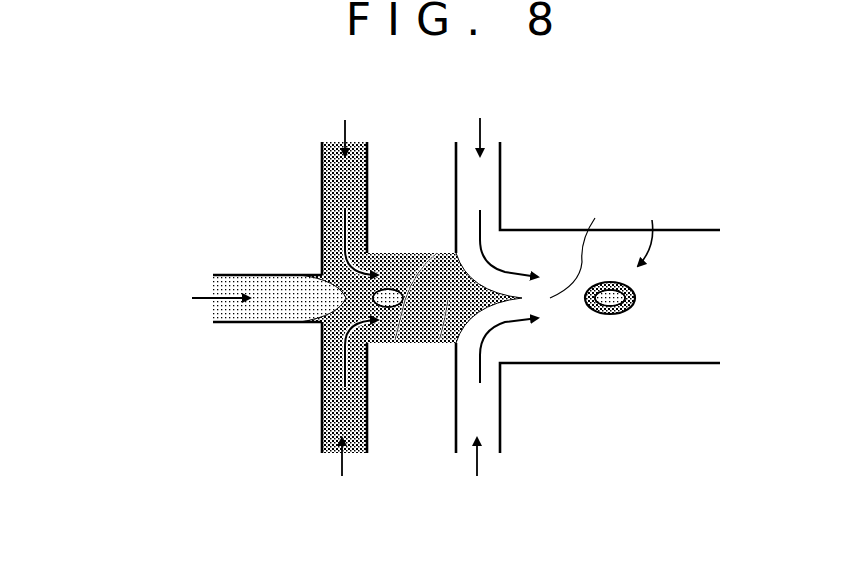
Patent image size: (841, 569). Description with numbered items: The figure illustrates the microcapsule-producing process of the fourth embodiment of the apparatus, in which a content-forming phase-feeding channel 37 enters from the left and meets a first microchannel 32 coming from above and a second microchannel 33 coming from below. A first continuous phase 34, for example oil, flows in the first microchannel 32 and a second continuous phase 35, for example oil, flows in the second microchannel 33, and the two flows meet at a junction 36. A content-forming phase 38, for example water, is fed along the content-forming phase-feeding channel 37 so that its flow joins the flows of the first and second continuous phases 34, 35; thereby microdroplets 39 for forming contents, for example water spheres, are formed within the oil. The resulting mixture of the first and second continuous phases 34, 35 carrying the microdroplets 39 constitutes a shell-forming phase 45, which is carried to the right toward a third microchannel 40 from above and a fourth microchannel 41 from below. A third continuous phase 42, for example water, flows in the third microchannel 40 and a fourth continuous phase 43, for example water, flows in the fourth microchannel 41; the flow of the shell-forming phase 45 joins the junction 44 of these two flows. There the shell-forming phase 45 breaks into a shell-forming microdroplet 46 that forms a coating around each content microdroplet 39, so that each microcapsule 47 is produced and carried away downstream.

The first microchannel 32 is at (369, 167).
The second microchannel 33 is at (369, 430).
The first continuous phase 34 is at (369, 218).
The second continuous phase 35 is at (369, 383).
The junction of flows of the first continuous phase and the second continuous phase 36 is at (392, 288).
The content-forming phase-feeding channel 37 is at (226, 275).
The content-forming phase 38 is at (272, 295).
The microdroplet 39 is at (437, 253).
The third microchannel 40 is at (502, 167).
The fourth microchannel 41 is at (502, 430).
The third continuous phase 42 is at (488, 213).
The fourth continuous phase 43 is at (488, 383).
The junction of flows of the third continuous phase and the fourth continuous phase 44 is at (580, 248).
The shell-forming phase 45 is at (440, 338).
The shell-forming microdroplet 46 is at (636, 293).
The microcapsule 47 is at (658, 232).